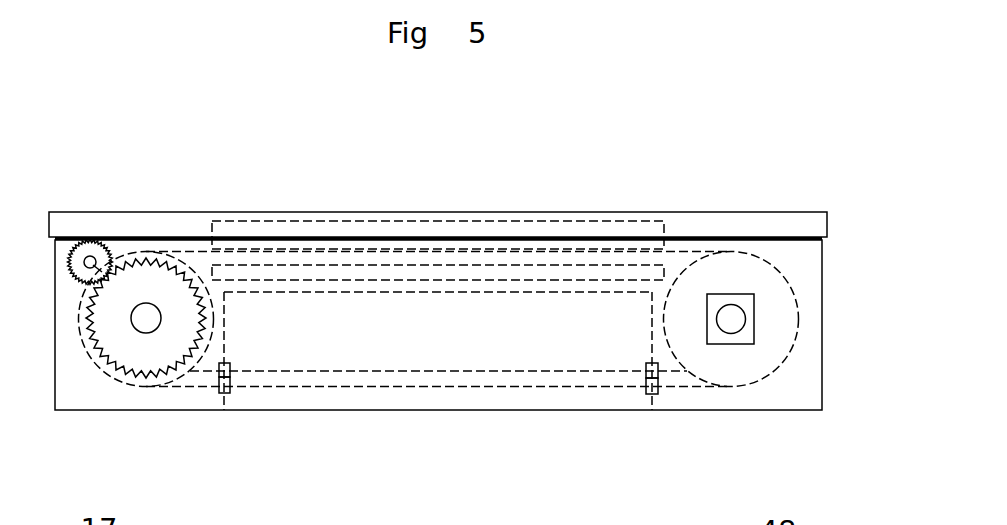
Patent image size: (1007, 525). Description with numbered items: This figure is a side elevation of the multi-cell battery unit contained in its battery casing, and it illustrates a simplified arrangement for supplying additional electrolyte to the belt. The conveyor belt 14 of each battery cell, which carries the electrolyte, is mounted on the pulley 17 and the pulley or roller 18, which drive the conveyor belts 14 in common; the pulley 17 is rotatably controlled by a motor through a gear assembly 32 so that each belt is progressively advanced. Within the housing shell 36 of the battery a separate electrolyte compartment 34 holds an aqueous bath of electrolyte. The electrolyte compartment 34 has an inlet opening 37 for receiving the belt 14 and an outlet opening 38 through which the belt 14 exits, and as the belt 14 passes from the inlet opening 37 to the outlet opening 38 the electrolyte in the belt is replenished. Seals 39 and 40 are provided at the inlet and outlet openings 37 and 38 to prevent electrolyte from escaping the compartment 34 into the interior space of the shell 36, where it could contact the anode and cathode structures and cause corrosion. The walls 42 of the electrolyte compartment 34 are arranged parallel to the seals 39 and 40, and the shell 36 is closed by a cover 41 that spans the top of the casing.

The conveyor belt 14 is at (675, 259).
The pulley 17 is at (135, 258).
The pulley (roller) 18 is at (738, 250).
The gear assembly 32 is at (75, 282).
The electrolyte compartment 34 is at (438, 347).
The housing shell 36 is at (822, 282).
The inlet opening 37 is at (660, 386).
The outlet opening 38 is at (220, 387).
The seal 39 is at (647, 380).
The seal 40 is at (232, 378).
The cover 41 is at (702, 229).
The walls 42 is at (224, 328).